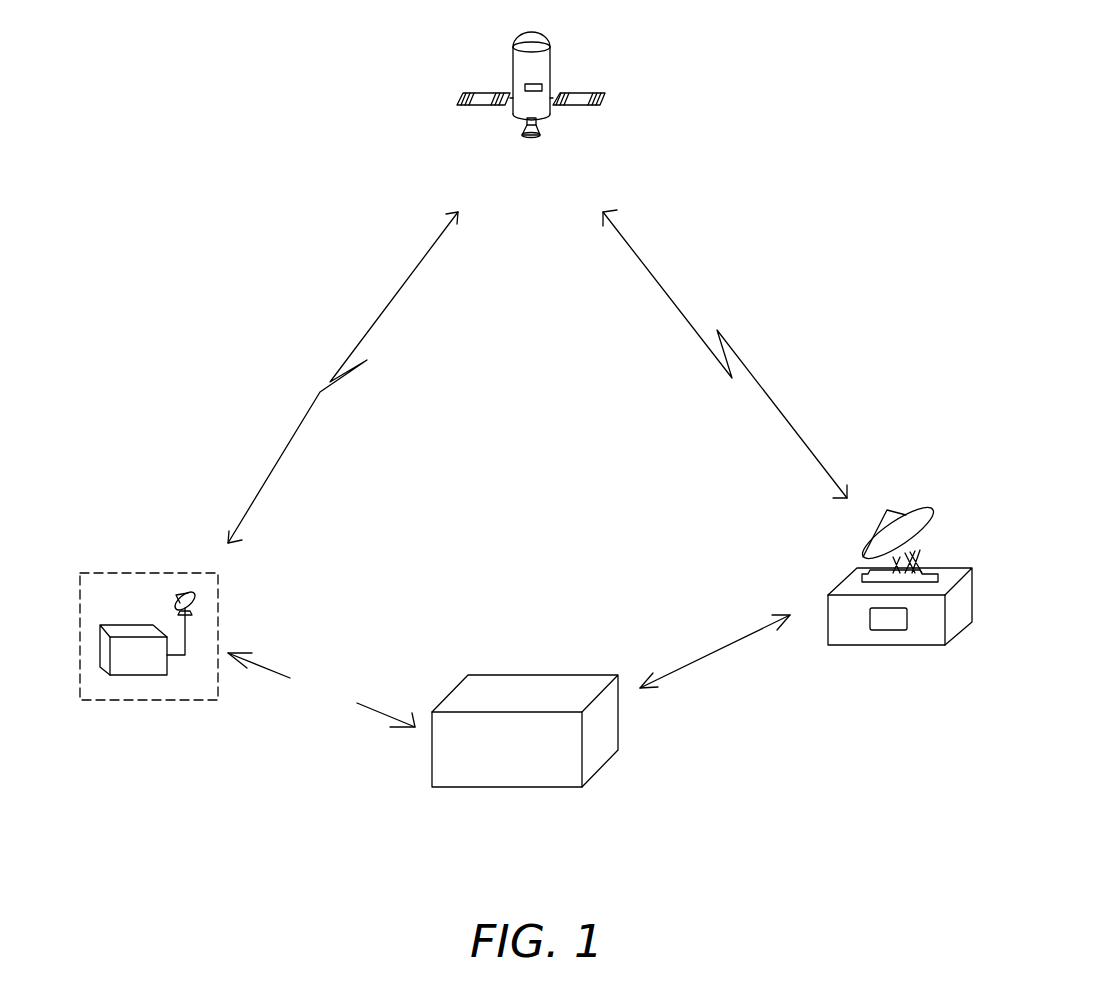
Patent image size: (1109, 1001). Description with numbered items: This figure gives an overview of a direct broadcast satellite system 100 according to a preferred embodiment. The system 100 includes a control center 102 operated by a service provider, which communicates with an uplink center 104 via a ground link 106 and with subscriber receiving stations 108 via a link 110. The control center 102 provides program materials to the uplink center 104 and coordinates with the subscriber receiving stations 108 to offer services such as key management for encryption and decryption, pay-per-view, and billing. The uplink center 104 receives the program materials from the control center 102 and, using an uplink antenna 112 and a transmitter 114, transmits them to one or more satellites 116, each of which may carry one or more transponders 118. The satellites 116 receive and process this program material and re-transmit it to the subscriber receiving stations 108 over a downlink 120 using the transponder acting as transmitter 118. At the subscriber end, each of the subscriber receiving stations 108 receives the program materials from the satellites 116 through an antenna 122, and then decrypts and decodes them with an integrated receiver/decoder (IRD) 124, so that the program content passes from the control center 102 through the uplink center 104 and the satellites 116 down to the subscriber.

The direct broadcast satellite system 100 is at (802, 195).
The control center 102 is at (604, 763).
The uplink center 104 is at (880, 647).
The ground link 106 is at (708, 652).
The subscriber receiving stations 108 is at (220, 623).
The link 110 is at (355, 662).
The uplink antenna 112 is at (935, 520).
The transmitter 114 is at (907, 630).
The satellites 116 is at (578, 105).
The transponders 118 is at (535, 84).
The downlink 120 is at (390, 297).
The antenna 122 is at (187, 592).
The integrated receiver/decoder (IRD) 124 is at (138, 677).